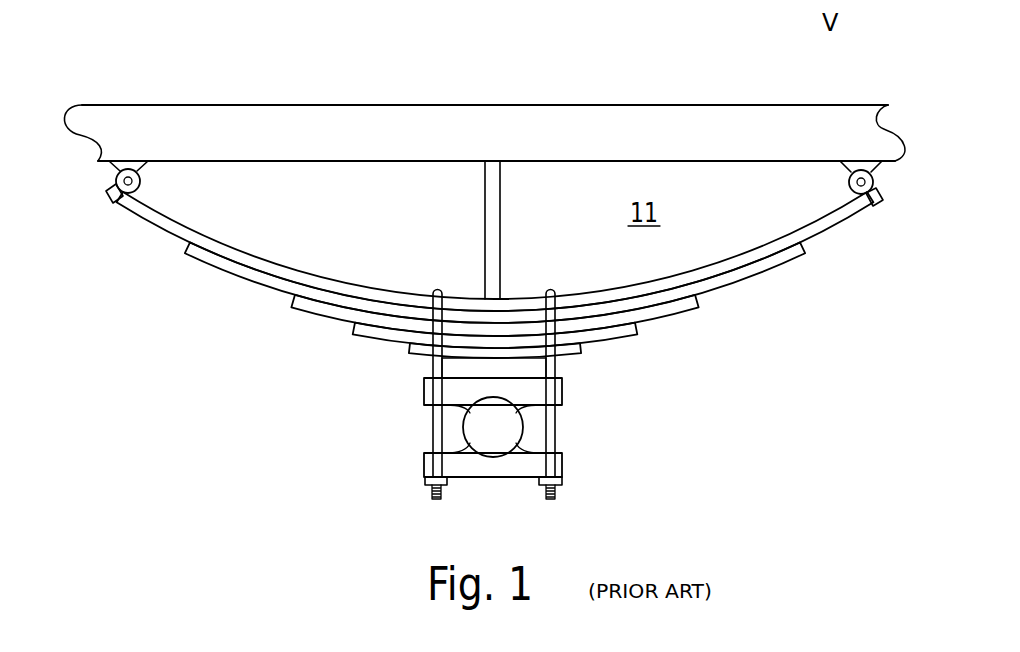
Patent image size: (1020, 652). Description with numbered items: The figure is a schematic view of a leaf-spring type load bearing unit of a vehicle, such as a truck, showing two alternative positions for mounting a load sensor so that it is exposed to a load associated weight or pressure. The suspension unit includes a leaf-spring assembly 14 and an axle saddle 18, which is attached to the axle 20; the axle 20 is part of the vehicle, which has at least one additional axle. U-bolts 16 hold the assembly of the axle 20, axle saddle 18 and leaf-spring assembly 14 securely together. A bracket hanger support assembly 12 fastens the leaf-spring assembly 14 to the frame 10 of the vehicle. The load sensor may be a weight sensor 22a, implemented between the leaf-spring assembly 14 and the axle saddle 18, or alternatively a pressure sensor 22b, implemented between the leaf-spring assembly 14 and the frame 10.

The frame 10 is at (274, 117).
The bracket hanger support assembly 12 is at (108, 164).
The leaf-spring assembly 14 is at (253, 279).
The U-bolts 16 is at (440, 293).
The axle saddle 18 is at (424, 465).
The axle 20 is at (500, 425).
The weight sensor 22a is at (520, 364).
The pressure sensor 22b is at (498, 198).